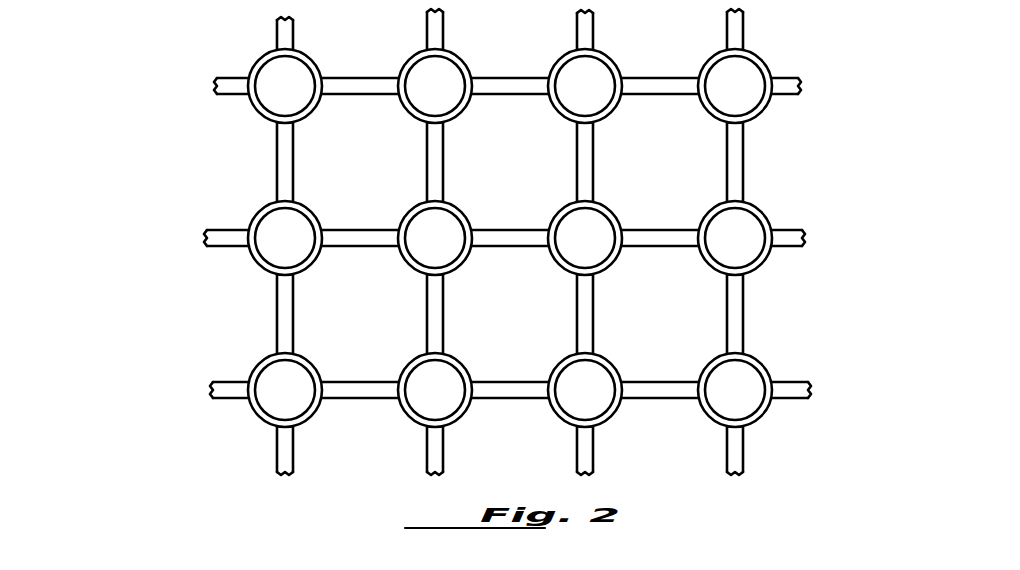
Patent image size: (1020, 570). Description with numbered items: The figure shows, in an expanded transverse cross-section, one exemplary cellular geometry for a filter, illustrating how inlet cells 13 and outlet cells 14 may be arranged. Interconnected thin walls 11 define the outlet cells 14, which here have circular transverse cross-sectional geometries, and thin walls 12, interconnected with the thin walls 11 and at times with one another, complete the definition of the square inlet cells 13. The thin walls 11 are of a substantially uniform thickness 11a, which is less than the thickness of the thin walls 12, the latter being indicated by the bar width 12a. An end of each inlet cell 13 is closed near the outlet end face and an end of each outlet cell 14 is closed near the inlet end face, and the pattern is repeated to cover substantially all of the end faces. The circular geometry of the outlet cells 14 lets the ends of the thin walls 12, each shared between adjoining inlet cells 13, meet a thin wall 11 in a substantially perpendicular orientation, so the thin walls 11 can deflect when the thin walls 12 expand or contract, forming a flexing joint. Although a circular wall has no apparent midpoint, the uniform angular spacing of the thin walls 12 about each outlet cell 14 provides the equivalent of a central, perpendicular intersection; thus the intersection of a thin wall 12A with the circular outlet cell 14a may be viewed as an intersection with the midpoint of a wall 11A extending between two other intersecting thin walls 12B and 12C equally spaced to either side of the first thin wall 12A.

The thin walls 11 is at (268, 207).
The wall 11A is at (410, 365).
The thickness 11a is at (586, 389).
The thin walls 12 is at (354, 232).
The thin wall 12A is at (429, 309).
The thin wall 12B is at (367, 389).
The thin wall 12C is at (513, 387).
The bar width 12a is at (535, 163).
The inlet cells 13 is at (377, 325).
The outlet cells 14 is at (446, 102).
The circular outlet cell 14a is at (455, 403).